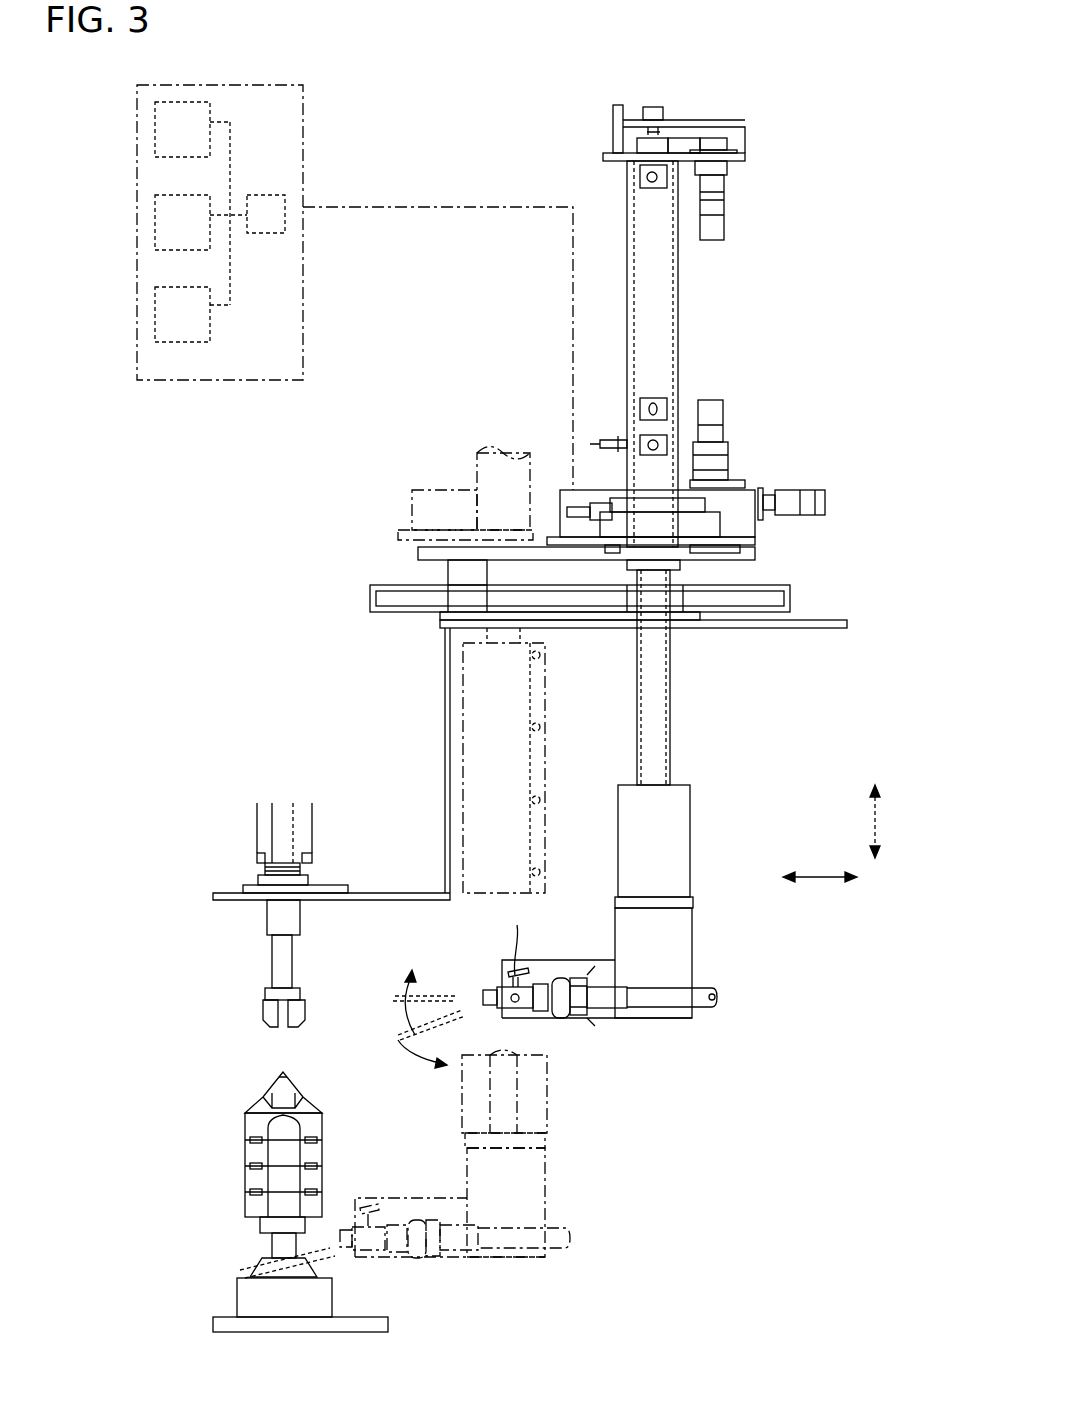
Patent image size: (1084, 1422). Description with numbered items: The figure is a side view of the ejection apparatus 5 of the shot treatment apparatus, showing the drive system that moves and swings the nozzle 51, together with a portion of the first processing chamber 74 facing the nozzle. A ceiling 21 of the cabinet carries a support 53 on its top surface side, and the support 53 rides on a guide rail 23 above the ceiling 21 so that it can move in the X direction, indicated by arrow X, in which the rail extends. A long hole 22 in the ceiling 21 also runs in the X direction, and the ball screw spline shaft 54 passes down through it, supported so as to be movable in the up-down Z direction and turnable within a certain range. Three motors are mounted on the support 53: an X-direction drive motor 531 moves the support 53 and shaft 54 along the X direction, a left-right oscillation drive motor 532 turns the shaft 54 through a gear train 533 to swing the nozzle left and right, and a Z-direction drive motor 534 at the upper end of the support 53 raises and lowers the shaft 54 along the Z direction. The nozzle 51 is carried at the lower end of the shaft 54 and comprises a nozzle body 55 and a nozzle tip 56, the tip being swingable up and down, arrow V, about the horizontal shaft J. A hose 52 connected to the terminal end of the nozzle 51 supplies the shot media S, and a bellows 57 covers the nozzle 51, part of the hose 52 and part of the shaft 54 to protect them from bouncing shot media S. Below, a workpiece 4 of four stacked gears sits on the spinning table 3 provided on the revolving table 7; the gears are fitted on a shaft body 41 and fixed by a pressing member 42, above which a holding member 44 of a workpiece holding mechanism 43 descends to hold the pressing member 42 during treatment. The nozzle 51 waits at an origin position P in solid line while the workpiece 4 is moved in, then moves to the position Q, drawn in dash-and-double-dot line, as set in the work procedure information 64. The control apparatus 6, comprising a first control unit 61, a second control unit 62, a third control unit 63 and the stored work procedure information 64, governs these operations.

The spinning table 3 is at (240, 1295).
The workpiece 4 is at (250, 1148).
The ejection apparatus 5 is at (838, 178).
The control apparatus 6 is at (303, 185).
The revolving table 7 is at (375, 1325).
The ceiling 21 is at (815, 620).
The long hole 22 is at (690, 628).
The guide rail 23 is at (418, 555).
The shaft body 41 is at (268, 1242).
The pressing member 42 is at (278, 1082).
The workpiece holding mechanism 43 is at (234, 836).
The holding member 44 is at (265, 996).
The nozzle 51 is at (595, 1008).
The hose 52 is at (682, 1000).
The support 53 is at (680, 298).
The ball screw spline shaft 54 is at (655, 742).
The nozzle body 55 is at (545, 1008).
The nozzle tip 56 is at (500, 998).
The bellows 57 is at (508, 702).
The first control unit 61 is at (200, 145).
The second control unit 62 is at (200, 238).
The third control unit 63 is at (200, 330).
The work procedure information 64 is at (282, 228).
The first processing chamber 74 is at (125, 1068).
The X-direction drive motor 531 is at (802, 500).
The left-right oscillation drive motor 532 is at (706, 405).
The gear train 533 is at (612, 492).
The Z-direction drive motor 534 is at (712, 218).
The shaft J is at (513, 936).
The origin position P is at (692, 960).
The set position Q is at (545, 1175).
The shot media S is at (415, 1052).
The arrow V is at (424, 985).
The X-direction X is at (820, 862).
The Z-direction Z is at (884, 821).